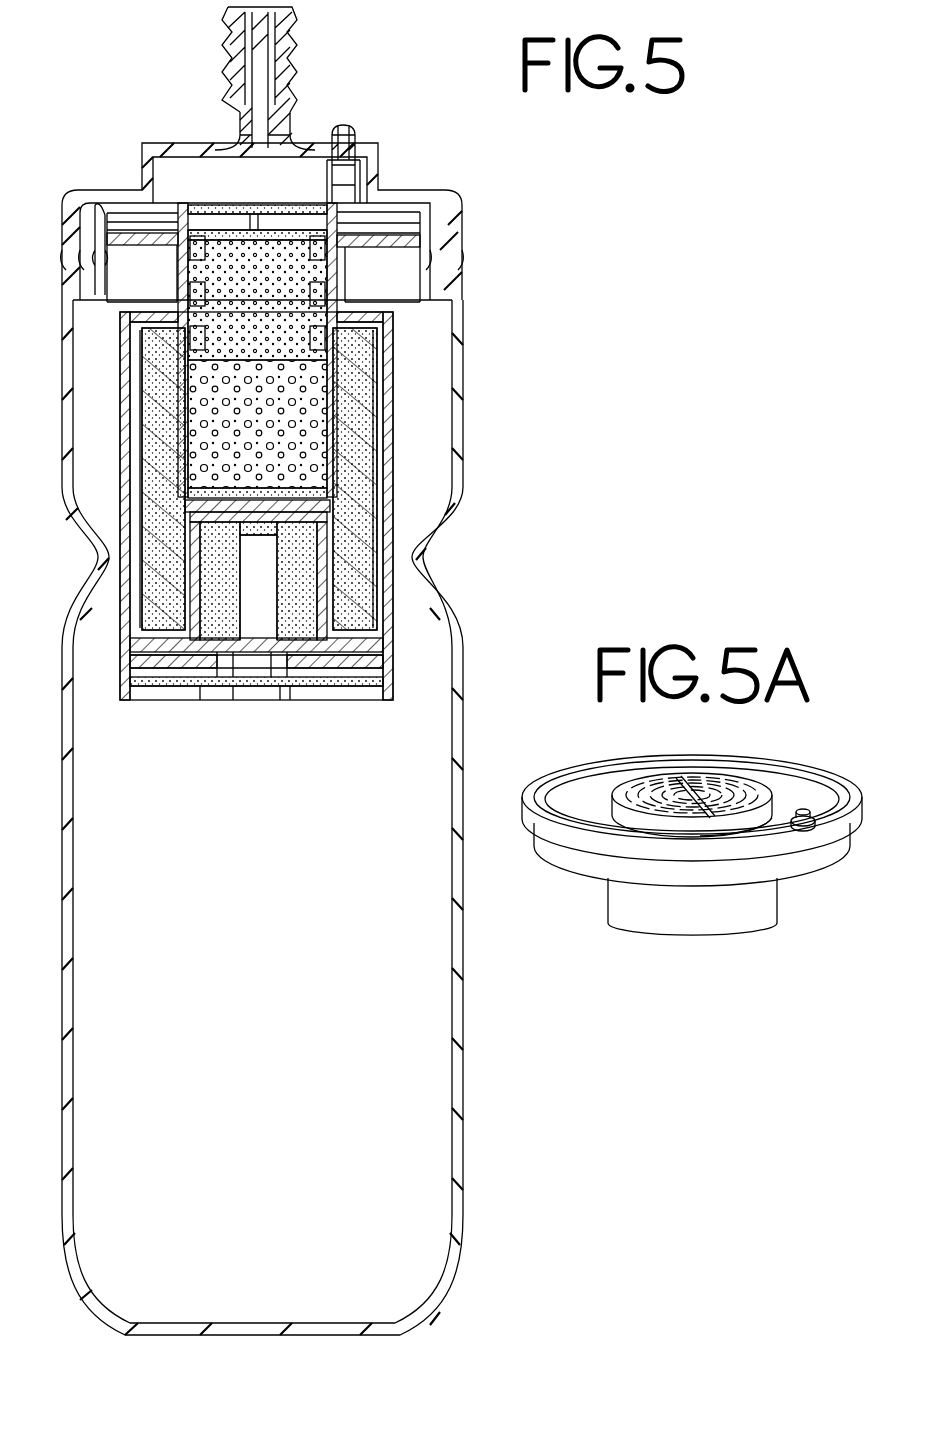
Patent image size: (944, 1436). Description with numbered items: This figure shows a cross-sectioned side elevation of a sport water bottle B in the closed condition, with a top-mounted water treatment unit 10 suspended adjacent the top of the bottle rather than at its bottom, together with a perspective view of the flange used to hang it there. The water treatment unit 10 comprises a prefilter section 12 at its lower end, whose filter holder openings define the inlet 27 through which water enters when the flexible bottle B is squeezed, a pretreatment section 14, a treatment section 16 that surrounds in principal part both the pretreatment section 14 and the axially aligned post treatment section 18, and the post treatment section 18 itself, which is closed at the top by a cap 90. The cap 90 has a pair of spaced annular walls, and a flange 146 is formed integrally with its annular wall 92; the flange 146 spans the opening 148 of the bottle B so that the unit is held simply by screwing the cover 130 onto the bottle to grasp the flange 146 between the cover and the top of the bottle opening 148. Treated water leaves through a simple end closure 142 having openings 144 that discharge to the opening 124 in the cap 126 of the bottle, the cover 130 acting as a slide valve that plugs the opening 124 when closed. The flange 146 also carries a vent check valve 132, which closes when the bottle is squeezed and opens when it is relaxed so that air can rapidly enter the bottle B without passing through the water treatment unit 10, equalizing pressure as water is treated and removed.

In FIG. 5, the sport water bottle B is at (470, 657).
In FIG. 5, the water treatment unit 10 is at (410, 432).
In FIG. 5, the prefilter section 12 is at (408, 668).
In FIG. 5, the pretreatment section 14 is at (217, 618).
In FIG. 5, the treatment section 16 is at (130, 445).
In FIG. 5, the post treatment section 18 is at (300, 405).
In FIG. 5, the inlet 27 is at (183, 698).
In FIG. 5, the cap 90 is at (185, 205).
In FIG. 5, the annular wall 92 is at (345, 196).
In FIG. 5A, the annular wall 92 is at (775, 812).
In FIG. 5, the opening 124 is at (265, 110).
In FIG. 5, the cap 126 is at (448, 200).
In FIG. 5, the cover 130 is at (292, 24).
In FIG. 5, the vent check valve 132 is at (348, 125).
In FIG. 5A, the vent check valve 132 is at (815, 812).
In FIG. 5A, the end closure 142 is at (728, 782).
In FIG. 5A, the openings 144 is at (745, 790).
In FIG. 5, the flange 146 is at (425, 240).
In FIG. 5A, the flange 146 is at (632, 762).
In FIG. 5, the opening 148 is at (452, 215).